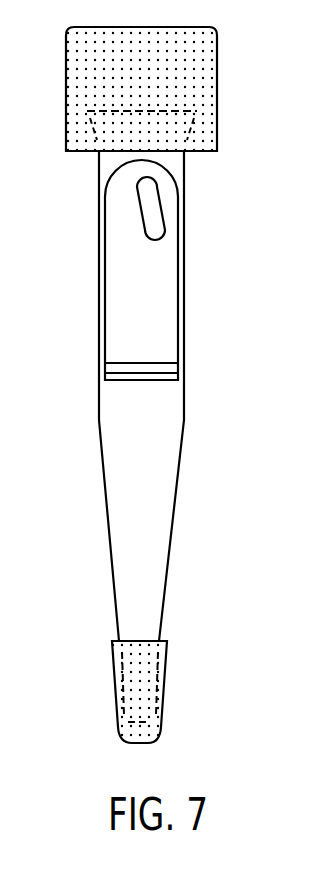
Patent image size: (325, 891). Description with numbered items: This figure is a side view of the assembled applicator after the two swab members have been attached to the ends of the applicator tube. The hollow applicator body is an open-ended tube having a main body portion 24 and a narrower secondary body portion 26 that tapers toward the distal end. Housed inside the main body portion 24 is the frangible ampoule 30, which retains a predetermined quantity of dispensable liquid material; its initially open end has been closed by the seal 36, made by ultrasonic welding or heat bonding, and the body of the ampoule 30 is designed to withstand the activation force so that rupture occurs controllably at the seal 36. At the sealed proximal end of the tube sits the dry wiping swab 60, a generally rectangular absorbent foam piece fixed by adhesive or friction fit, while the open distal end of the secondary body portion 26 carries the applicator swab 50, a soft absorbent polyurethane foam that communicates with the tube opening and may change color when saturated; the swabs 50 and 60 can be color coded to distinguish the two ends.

The dry wiping swab 60 is at (208, 62).
The main body portion 24 is at (98, 263).
The secondary body portion 26 is at (104, 492).
The frangible ampoule 30 is at (178, 268).
The seal 36 is at (178, 362).
The applicator swab 50 is at (156, 702).